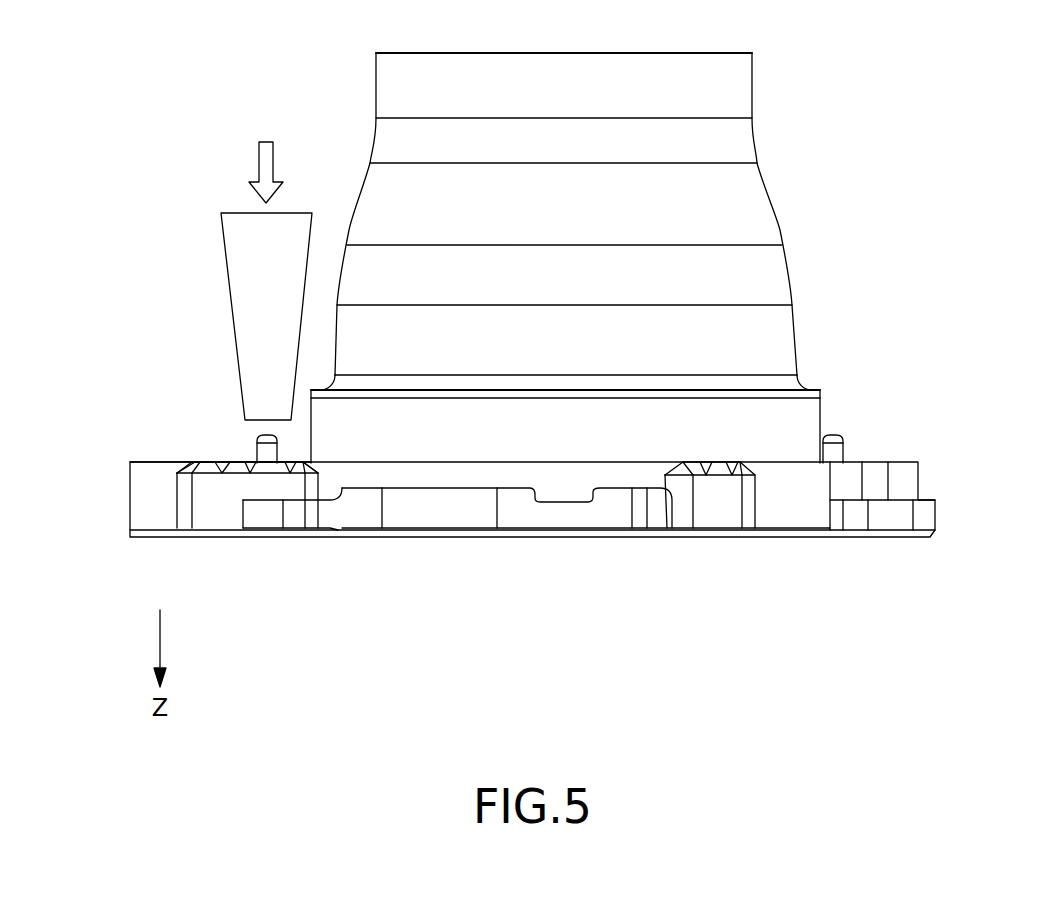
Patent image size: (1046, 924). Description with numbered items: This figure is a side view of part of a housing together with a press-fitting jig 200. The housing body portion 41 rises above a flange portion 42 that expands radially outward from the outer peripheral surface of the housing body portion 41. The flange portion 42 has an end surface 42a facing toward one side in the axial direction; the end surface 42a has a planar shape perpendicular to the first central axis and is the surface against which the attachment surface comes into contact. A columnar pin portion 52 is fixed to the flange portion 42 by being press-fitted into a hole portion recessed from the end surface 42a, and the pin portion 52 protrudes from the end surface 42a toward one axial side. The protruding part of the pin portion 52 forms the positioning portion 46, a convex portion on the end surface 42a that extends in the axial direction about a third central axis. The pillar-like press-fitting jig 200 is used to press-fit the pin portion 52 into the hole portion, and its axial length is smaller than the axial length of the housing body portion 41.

The housing body portion 41 is at (742, 208).
The flange portion 42 is at (147, 500).
The end surface 42a is at (150, 462).
The positioning portion 46 is at (848, 450).
The pin portion 52 is at (262, 450).
The press-fitting jig 200 is at (245, 285).